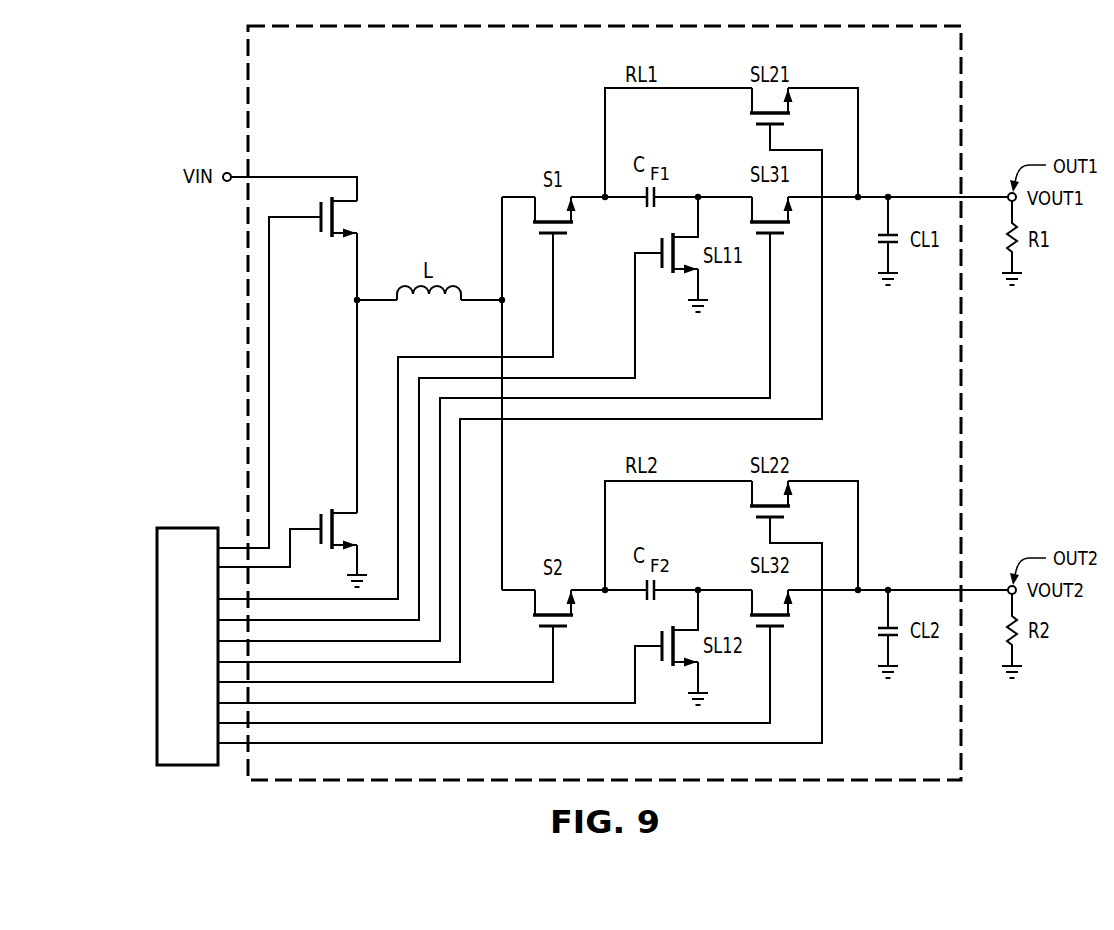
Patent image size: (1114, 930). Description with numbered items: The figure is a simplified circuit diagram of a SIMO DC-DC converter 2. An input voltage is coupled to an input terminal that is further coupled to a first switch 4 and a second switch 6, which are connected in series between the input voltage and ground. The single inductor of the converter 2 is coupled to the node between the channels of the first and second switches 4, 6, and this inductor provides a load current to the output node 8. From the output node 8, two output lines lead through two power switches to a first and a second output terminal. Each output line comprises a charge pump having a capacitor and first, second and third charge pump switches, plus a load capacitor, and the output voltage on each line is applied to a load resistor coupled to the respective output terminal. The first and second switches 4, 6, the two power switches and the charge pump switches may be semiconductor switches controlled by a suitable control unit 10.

The SIMO DC-DC converter 2 is at (243, 327).
The first switch 4 is at (318, 212).
The second switch 6 is at (318, 523).
The output node 8 is at (498, 304).
The control unit 10 is at (201, 660).